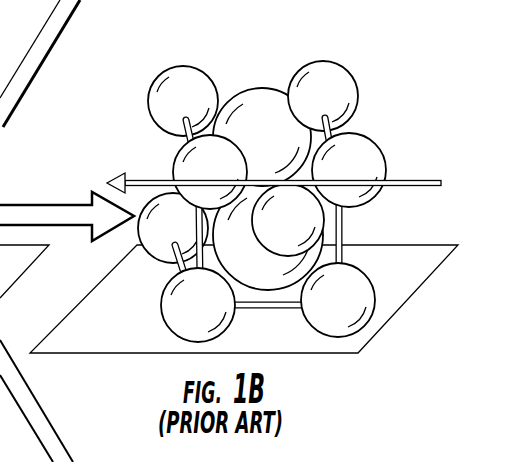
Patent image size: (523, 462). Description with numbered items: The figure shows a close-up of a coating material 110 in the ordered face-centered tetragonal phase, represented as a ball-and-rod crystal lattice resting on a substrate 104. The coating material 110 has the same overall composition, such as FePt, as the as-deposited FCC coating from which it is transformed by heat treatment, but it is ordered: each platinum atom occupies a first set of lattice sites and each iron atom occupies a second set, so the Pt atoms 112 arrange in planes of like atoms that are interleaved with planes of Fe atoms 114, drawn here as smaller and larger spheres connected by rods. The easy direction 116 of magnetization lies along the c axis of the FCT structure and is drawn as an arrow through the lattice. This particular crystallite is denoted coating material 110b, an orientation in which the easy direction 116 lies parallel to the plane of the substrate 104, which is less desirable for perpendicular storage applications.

The substrate 104 is at (355, 340).
The coating material 110 is at (220, 182).
The coating material 110b is at (136, 79).
The Pt atoms 112 is at (193, 65).
The Fe atoms 114 is at (267, 90).
The easy direction 116 is at (414, 180).